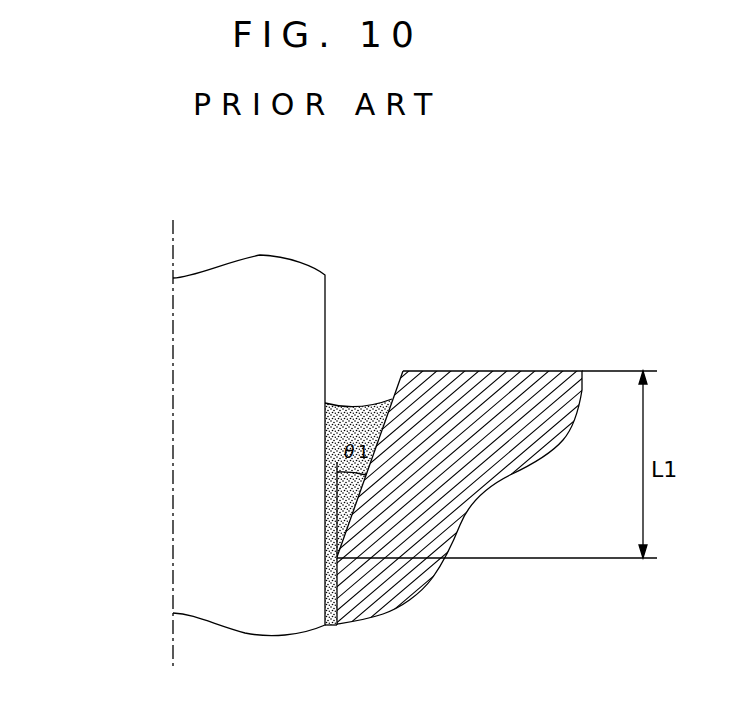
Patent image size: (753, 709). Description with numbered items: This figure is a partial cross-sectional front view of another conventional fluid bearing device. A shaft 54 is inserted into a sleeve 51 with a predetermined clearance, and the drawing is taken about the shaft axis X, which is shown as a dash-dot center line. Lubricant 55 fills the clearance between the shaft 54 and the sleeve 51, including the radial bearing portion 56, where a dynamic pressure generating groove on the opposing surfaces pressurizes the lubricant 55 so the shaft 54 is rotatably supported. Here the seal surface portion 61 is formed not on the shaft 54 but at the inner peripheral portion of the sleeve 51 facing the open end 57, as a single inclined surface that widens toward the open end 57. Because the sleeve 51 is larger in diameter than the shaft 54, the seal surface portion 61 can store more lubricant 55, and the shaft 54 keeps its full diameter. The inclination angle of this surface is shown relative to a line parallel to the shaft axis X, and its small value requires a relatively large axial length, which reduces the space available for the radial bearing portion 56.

The sleeve 51 is at (505, 408).
The shaft 54 is at (253, 285).
The lubricant 55 is at (348, 421).
The radial bearing portion 56 is at (330, 607).
The open end 57 is at (350, 358).
The seal surface portion 61 is at (373, 407).
The shaft axis X is at (173, 537).